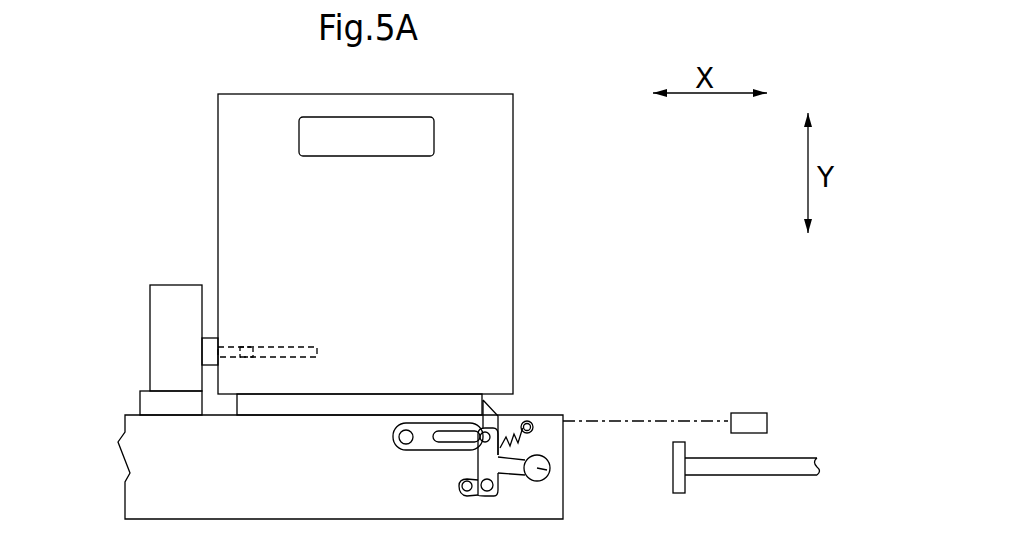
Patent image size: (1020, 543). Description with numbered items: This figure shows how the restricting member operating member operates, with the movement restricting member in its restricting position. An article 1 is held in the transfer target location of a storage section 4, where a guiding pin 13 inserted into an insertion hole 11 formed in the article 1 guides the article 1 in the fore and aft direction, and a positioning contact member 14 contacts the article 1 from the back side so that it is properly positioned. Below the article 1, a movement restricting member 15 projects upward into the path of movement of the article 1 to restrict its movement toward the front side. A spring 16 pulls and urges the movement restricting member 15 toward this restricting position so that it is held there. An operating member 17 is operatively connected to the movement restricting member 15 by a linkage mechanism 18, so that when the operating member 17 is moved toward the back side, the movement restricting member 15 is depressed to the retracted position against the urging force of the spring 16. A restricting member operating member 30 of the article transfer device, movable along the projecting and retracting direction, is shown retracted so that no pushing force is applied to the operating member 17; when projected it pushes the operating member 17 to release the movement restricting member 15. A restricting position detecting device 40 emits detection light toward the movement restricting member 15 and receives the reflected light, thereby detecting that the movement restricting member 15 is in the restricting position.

The article 1 is at (497, 237).
The storage section 4 is at (187, 217).
The insertion hole 11 is at (317, 356).
The guiding pin 13 is at (244, 343).
The positioning contact member 14 is at (210, 353).
The movement restricting member 15 is at (495, 407).
The spring 16 is at (533, 430).
The operating member 17 is at (549, 472).
The linkage mechanism 18 is at (420, 452).
The restricting member operating member 30 is at (728, 472).
The restricting position detecting device 40 is at (749, 420).